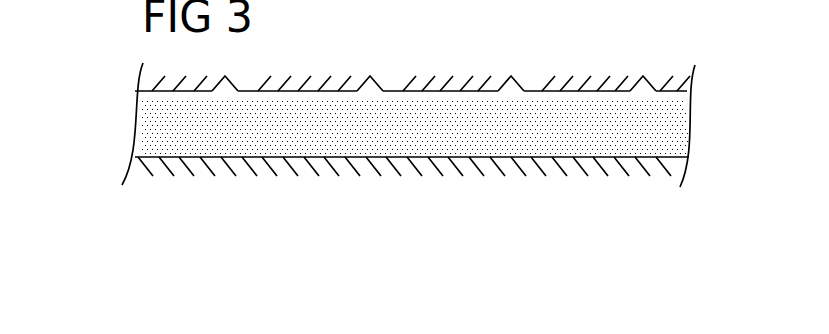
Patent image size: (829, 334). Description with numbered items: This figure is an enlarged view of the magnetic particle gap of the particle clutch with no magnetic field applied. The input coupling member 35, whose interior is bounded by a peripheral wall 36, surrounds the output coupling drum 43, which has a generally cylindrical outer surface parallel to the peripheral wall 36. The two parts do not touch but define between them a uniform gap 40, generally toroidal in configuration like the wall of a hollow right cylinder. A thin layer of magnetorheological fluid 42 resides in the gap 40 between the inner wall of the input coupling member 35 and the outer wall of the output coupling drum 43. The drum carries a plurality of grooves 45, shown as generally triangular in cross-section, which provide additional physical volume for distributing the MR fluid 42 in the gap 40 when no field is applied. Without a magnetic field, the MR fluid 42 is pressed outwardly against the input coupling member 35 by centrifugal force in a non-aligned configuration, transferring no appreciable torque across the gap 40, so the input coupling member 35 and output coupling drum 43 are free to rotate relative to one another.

The input coupling member 35 is at (103, 164).
The peripheral wall 36 is at (148, 146).
The gap 40 is at (104, 116).
The magnetorheological fluid 42 is at (680, 135).
The output coupling drum 43 is at (153, 92).
The grooves 45 is at (373, 80).